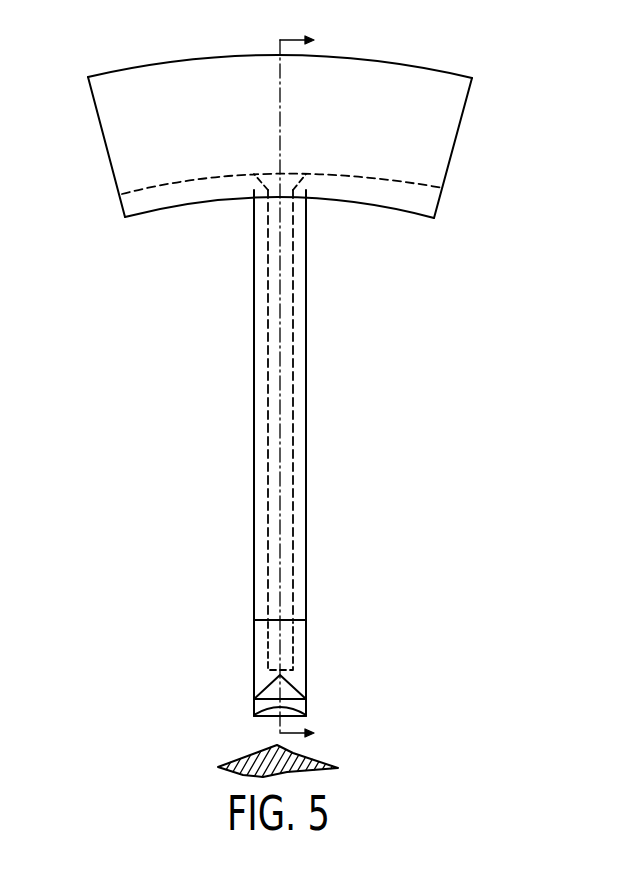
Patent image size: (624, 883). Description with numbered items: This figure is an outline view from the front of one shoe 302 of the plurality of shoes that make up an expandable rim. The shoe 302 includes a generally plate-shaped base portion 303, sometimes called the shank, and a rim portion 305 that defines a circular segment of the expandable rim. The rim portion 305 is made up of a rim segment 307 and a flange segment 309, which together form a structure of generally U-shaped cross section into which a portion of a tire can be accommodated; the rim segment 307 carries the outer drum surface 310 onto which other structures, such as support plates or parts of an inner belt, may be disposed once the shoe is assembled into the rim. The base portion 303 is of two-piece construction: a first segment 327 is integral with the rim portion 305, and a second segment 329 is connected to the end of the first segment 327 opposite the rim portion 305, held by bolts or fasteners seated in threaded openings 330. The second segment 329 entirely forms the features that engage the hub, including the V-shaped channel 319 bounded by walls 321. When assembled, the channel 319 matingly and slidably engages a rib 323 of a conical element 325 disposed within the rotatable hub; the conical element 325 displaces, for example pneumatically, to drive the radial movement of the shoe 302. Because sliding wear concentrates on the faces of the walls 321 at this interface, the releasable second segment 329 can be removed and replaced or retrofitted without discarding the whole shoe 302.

The shoe 302 is at (502, 77).
The base portion 303 is at (322, 448).
The rim portion 305 is at (463, 137).
The rim segment 307 is at (142, 205).
The flange segment 309 is at (115, 124).
The outer drum surface 310 is at (443, 188).
The V-shaped channel 319 is at (288, 695).
The walls of the channel 321 is at (263, 685).
The rib 323 is at (300, 750).
The conical element 325 is at (323, 767).
The first segment 327 is at (298, 303).
The second segment 329 is at (297, 633).
The threaded openings 330 is at (283, 330).